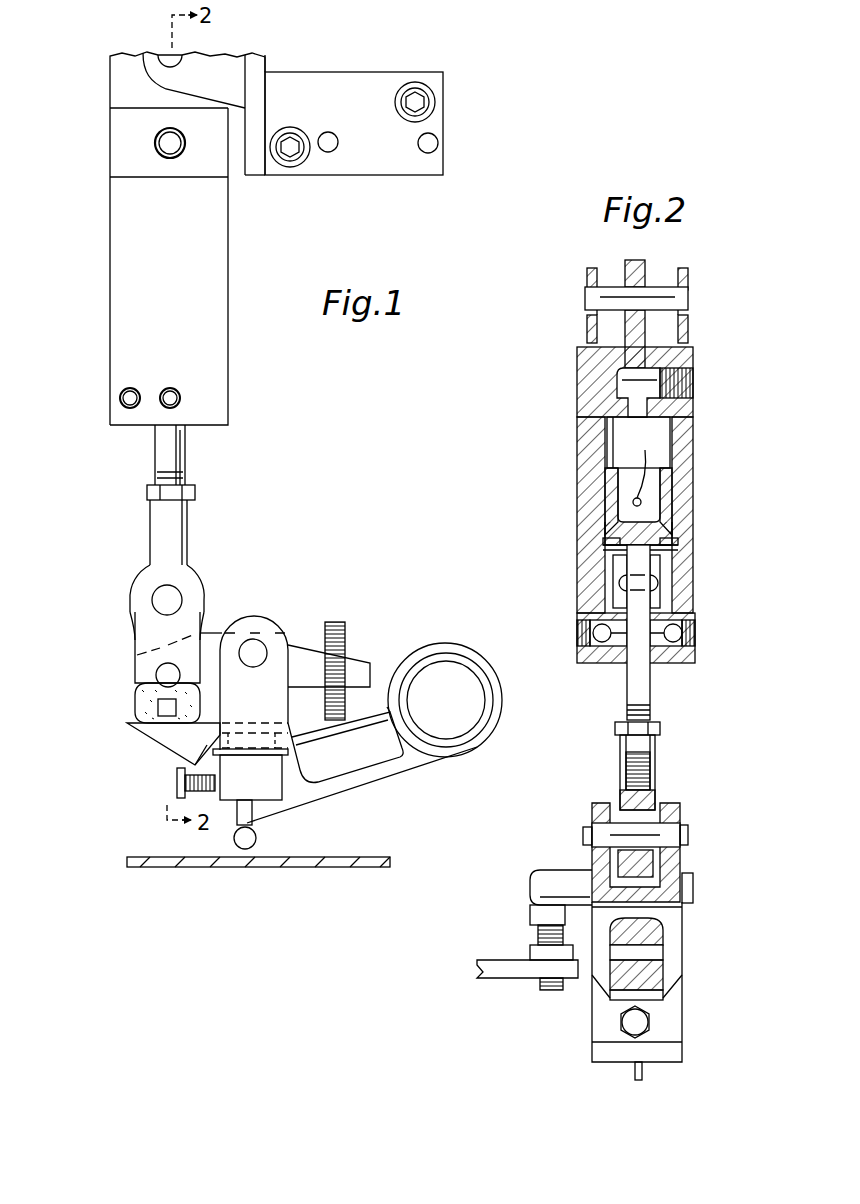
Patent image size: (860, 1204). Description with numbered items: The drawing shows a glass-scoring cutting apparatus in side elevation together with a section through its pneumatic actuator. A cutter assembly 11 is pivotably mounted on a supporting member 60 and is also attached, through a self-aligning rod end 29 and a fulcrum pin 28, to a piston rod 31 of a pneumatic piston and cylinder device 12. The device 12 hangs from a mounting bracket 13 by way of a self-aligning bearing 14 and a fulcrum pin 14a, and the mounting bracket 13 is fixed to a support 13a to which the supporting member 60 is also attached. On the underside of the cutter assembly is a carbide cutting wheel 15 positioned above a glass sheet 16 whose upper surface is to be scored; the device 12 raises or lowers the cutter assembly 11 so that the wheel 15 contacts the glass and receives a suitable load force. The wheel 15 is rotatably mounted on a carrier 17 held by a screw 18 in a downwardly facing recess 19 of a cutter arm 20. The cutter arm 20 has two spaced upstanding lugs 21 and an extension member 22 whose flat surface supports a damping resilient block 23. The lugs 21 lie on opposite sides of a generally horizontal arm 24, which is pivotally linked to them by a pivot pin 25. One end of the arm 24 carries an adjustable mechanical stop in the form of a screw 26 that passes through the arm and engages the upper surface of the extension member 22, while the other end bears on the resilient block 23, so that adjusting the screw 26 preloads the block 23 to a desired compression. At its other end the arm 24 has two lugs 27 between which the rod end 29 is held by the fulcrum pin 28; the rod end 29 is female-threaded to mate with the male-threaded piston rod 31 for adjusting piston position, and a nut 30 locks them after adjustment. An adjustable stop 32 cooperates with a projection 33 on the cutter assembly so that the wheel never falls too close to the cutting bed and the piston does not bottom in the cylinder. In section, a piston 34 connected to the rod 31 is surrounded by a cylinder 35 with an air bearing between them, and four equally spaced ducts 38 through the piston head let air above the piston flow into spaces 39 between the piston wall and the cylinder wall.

In FIG. 1, the cutter assembly 11 is at (378, 797).
In FIG. 1, the pneumatic piston and cylinder device 12 is at (128, 293).
In FIG. 1, the mounting bracket 13 is at (205, 62).
In FIG. 2, the mounting bracket 13 is at (585, 318).
In FIG. 1, the support 13a is at (350, 90).
In FIG. 2, the self-aligning bearing 14 is at (624, 317).
In FIG. 2, the fulcrum pin 14a is at (597, 297).
In FIG. 1, the cutting wheel 15 is at (252, 840).
In FIG. 2, the cutting wheel 15 is at (645, 1072).
In FIG. 1, the glass sheet 16 is at (166, 860).
In FIG. 1, the carrier 17 is at (282, 792).
In FIG. 1, the screw 18 is at (178, 785).
In FIG. 2, the screw 18 is at (650, 1022).
In FIG. 1, the downwardly facing recess 19 is at (222, 815).
In FIG. 1, the cutter arm 20 is at (390, 770).
In FIG. 1, the upstanding lugs 21 is at (275, 655).
In FIG. 1, the extension member 22 is at (150, 742).
In FIG. 2, the extension member 22 is at (665, 975).
In FIG. 1, the resilient block 23 is at (136, 708).
In FIG. 2, the resilient block 23 is at (665, 938).
In FIG. 1, the horizontal arm 24 is at (303, 655).
In FIG. 1, the pivot pin 25 is at (252, 645).
In FIG. 2, the pivot pin 25 is at (694, 887).
In FIG. 1, the screw 26 is at (347, 642).
In FIG. 1, the lugs 27 is at (137, 638).
In FIG. 2, the lugs 27 is at (597, 815).
In FIG. 1, the fulcrum pin 28 is at (172, 596).
In FIG. 2, the fulcrum pin 28 is at (683, 830).
In FIG. 1, the self-aligning rod end 29 is at (172, 523).
In FIG. 2, the self-aligning rod end 29 is at (655, 768).
In FIG. 1, the nut 30 is at (192, 484).
In FIG. 2, the nut 30 is at (662, 727).
In FIG. 1, the piston rod 31 is at (165, 445).
In FIG. 2, the piston rod 31 is at (627, 683).
In FIG. 2, the adjustable stop 32 is at (533, 918).
In FIG. 2, the projection 33 is at (555, 870).
In FIG. 2, the piston 34 is at (667, 478).
In FIG. 2, the cylinder 35 is at (685, 595).
In FIG. 2, the ducts 38 is at (638, 442).
In FIG. 2, the spaces 39 is at (668, 502).
In FIG. 1, the supporting member 60 is at (446, 698).